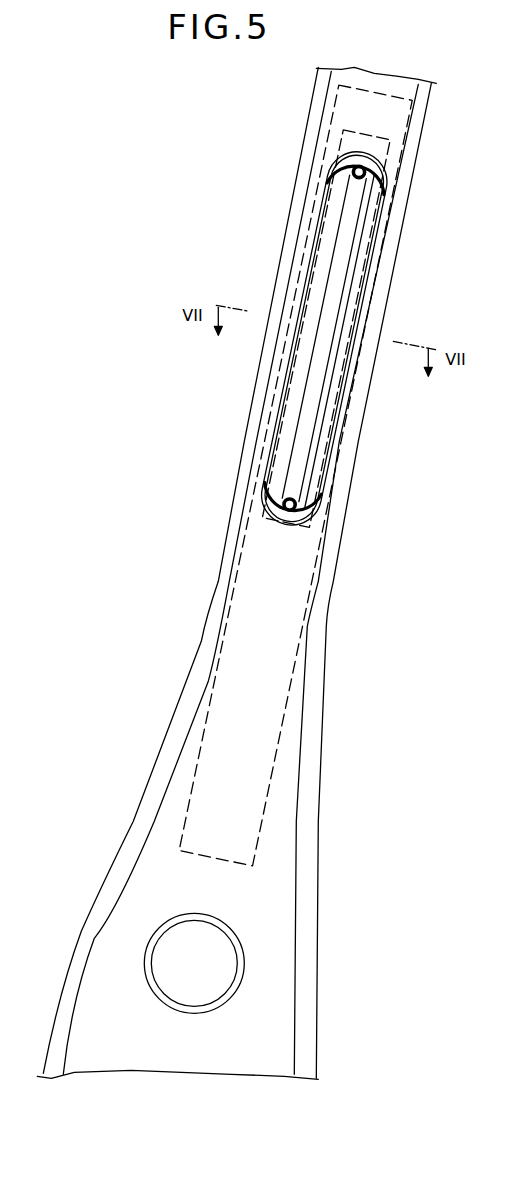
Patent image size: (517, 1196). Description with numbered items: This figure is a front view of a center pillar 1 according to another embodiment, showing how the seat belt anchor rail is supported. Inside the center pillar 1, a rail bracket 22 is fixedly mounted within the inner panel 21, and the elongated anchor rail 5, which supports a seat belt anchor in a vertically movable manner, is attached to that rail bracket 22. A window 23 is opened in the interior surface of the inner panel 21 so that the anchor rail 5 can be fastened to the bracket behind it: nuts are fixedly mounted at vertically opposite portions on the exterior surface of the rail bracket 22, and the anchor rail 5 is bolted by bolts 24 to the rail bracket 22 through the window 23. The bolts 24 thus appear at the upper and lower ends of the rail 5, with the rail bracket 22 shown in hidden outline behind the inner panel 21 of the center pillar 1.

The center pillar 1 is at (199, 639).
The anchor rail 5 is at (322, 422).
The inner panel 21 is at (191, 711).
The rail bracket 22 is at (235, 582).
The window 23 is at (282, 430).
The bolts 24 is at (351, 173).